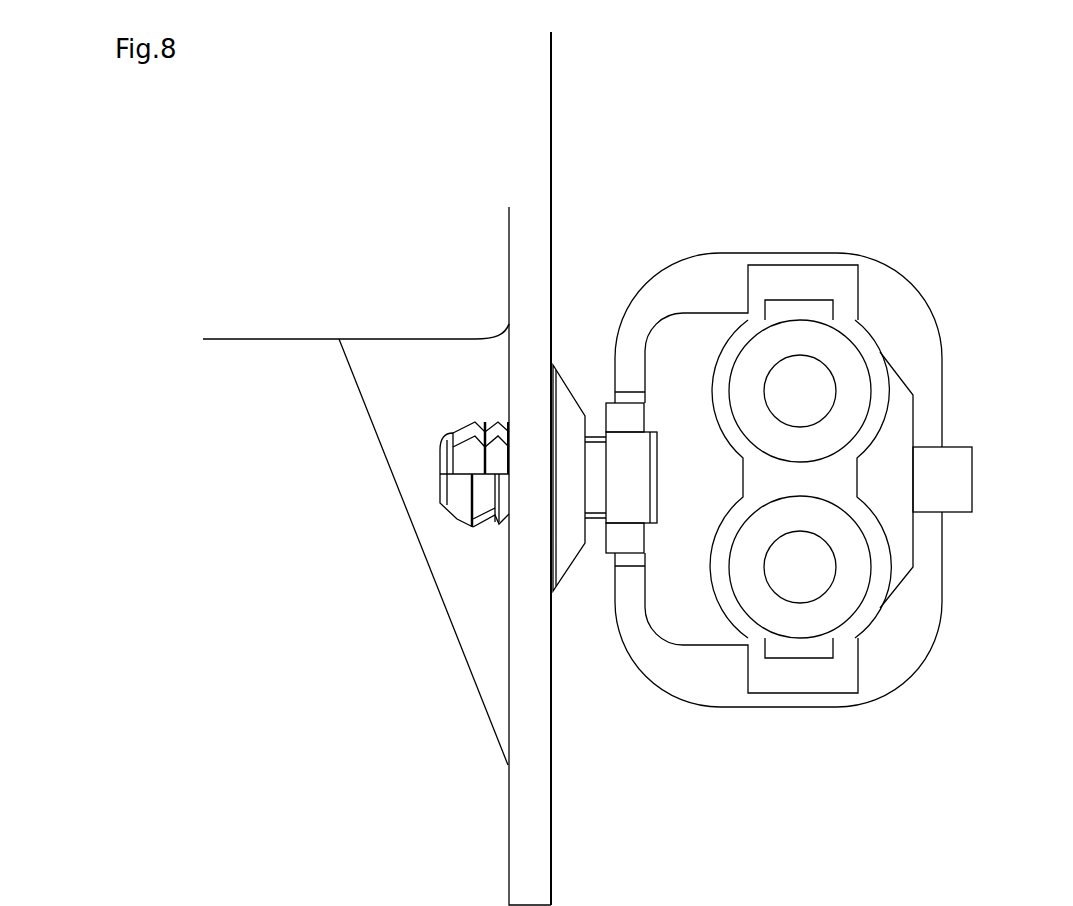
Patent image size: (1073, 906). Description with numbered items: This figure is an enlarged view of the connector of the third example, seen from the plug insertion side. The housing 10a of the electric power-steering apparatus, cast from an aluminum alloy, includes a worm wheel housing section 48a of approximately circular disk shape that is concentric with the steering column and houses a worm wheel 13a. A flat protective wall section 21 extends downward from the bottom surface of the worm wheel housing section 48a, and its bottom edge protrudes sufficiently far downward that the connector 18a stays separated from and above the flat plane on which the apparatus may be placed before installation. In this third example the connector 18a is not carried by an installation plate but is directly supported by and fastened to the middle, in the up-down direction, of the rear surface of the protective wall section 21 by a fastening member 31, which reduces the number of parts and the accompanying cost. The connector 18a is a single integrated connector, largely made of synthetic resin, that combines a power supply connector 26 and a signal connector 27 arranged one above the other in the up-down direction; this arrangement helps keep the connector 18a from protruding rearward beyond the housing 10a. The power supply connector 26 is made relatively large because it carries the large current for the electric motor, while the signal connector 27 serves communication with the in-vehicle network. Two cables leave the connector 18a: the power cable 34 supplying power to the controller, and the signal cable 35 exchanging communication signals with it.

The housing 10a is at (488, 120).
The protective wall section 21 is at (530, 848).
The worm wheel 13a is at (248, 270).
The worm wheel housing section 48a is at (302, 270).
The fastening member 31 is at (485, 505).
The power supply connector 26 is at (868, 273).
The connector 18a is at (908, 307).
The signal connector 27 is at (895, 660).
The power cable 34 is at (836, 391).
The signal cable 35 is at (836, 567).